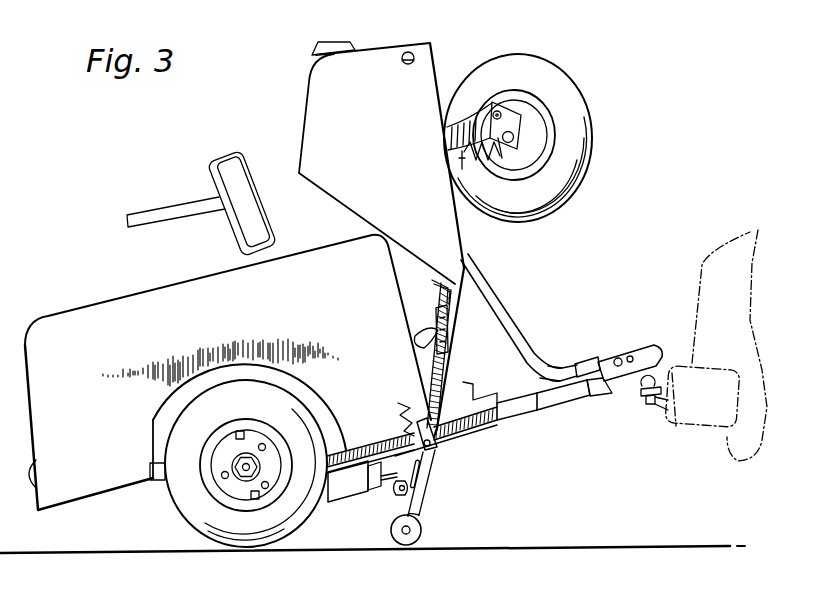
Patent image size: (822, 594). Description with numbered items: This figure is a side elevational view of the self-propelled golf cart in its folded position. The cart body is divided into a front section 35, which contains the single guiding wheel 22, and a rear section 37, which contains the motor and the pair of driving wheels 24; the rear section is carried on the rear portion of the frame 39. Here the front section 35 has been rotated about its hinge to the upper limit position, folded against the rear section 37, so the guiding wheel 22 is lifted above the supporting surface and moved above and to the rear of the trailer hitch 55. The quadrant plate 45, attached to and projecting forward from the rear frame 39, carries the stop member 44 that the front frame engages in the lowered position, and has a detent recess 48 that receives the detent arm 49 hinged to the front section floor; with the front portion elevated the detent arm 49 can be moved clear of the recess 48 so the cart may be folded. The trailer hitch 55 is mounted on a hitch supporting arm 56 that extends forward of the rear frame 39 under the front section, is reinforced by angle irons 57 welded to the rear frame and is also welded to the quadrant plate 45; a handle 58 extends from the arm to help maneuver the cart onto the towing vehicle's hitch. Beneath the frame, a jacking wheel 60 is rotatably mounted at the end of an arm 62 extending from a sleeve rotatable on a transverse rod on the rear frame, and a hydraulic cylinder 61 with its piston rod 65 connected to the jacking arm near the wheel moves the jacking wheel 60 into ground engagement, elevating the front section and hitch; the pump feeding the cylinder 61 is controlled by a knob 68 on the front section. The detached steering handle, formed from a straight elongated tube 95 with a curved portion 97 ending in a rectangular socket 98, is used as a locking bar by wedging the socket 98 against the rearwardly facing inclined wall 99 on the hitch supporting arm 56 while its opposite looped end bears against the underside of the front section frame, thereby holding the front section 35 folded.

The guiding wheel 22 is at (578, 107).
The driving wheels 24 is at (193, 488).
The front section 35 is at (422, 82).
The rear section 37 is at (80, 333).
The rear portion of the frame 39 is at (357, 440).
The stop member 44 is at (468, 393).
The quadrant plate 45 is at (472, 410).
The detent recess 48 is at (470, 390).
The detent arm 49 is at (413, 334).
The trailer hitch 55 is at (699, 318).
The hitch supporting arm 56 is at (563, 410).
The angle irons 57 is at (520, 416).
The handle 58 is at (621, 355).
The jacking wheel 60 is at (422, 531).
The hydraulic cylinder 61 is at (353, 488).
The arm 62 is at (436, 470).
The piston rod 65 is at (398, 494).
The knob 68 is at (408, 52).
The tube 95 is at (495, 312).
The curved portion 97 is at (555, 372).
The socket 98 is at (592, 356).
The inclined wall 99 is at (600, 368).